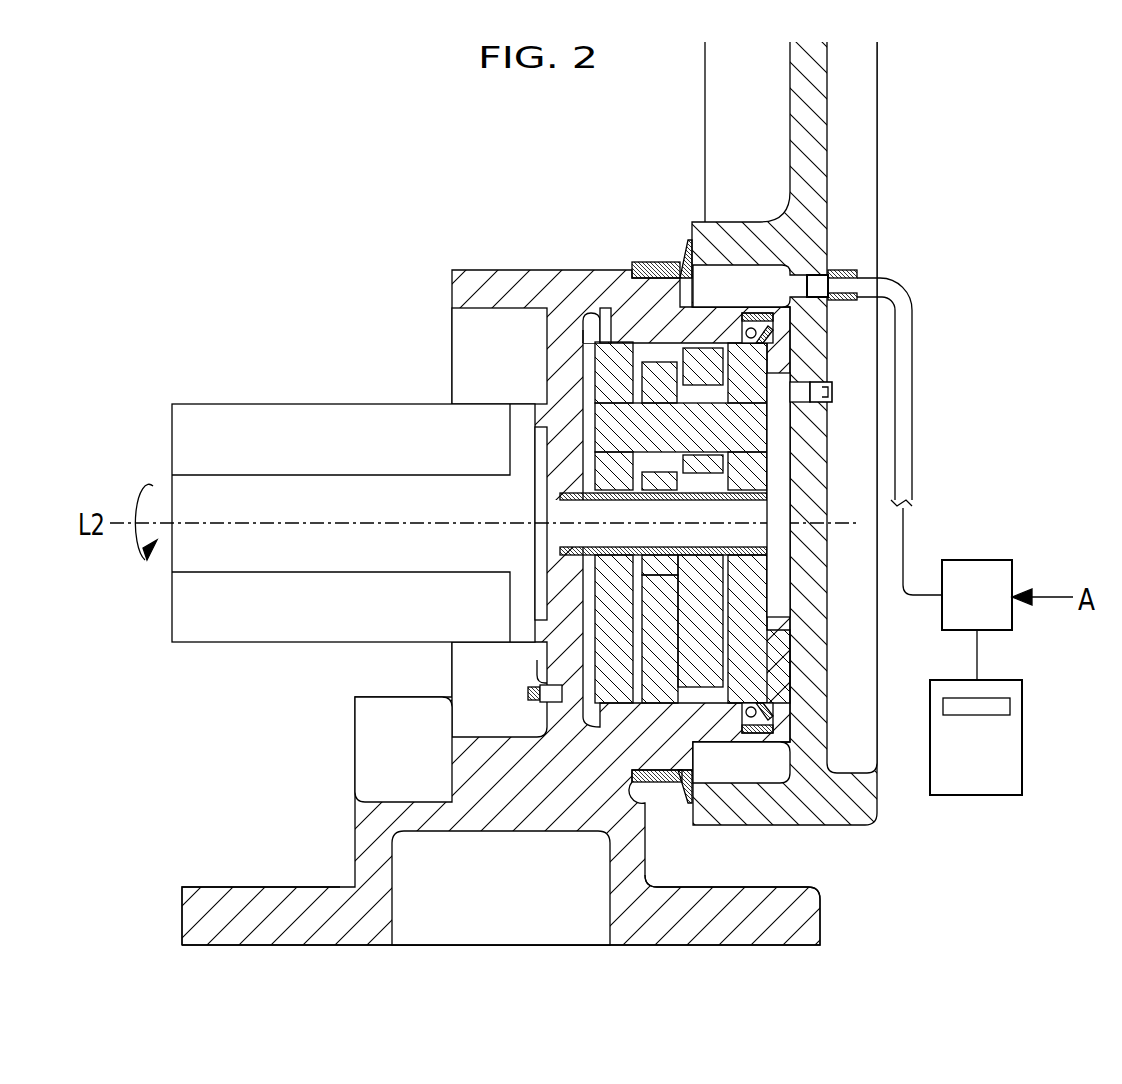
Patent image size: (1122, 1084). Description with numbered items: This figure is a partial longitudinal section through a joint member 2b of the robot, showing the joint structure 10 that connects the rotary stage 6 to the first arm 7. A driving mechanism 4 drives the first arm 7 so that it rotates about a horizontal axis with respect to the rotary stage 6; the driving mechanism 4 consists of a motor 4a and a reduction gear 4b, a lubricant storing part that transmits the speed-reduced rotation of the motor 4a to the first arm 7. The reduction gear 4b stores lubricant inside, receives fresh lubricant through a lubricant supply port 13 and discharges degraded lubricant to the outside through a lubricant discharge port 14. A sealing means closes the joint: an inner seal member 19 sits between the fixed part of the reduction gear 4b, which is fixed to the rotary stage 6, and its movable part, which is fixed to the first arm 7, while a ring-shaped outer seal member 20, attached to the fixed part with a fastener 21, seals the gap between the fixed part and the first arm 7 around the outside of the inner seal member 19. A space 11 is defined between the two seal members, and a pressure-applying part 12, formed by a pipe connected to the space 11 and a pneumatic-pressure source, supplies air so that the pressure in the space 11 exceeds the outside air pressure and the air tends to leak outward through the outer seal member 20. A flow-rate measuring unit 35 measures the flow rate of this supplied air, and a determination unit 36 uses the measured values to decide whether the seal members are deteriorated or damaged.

The drive unit 2b is at (265, 98).
The joint structure 10 is at (440, 197).
The driving mechanism 4 is at (391, 444).
The motor 4a is at (272, 425).
The reduction gear 4b is at (607, 313).
The fastener 21 is at (640, 264).
The outer seal member 20 is at (658, 262).
The space 11 is at (725, 280).
The first arm 7 is at (827, 82).
The pressure-applying part 12 is at (850, 270).
The inner seal member 19 is at (778, 325).
The lubricant discharge port 14 is at (832, 392).
The lubricant supply port 13 is at (527, 691).
The flow-rate measuring unit 35 is at (975, 560).
The determination unit 36 is at (1002, 705).
The rotary stage 6 is at (822, 925).